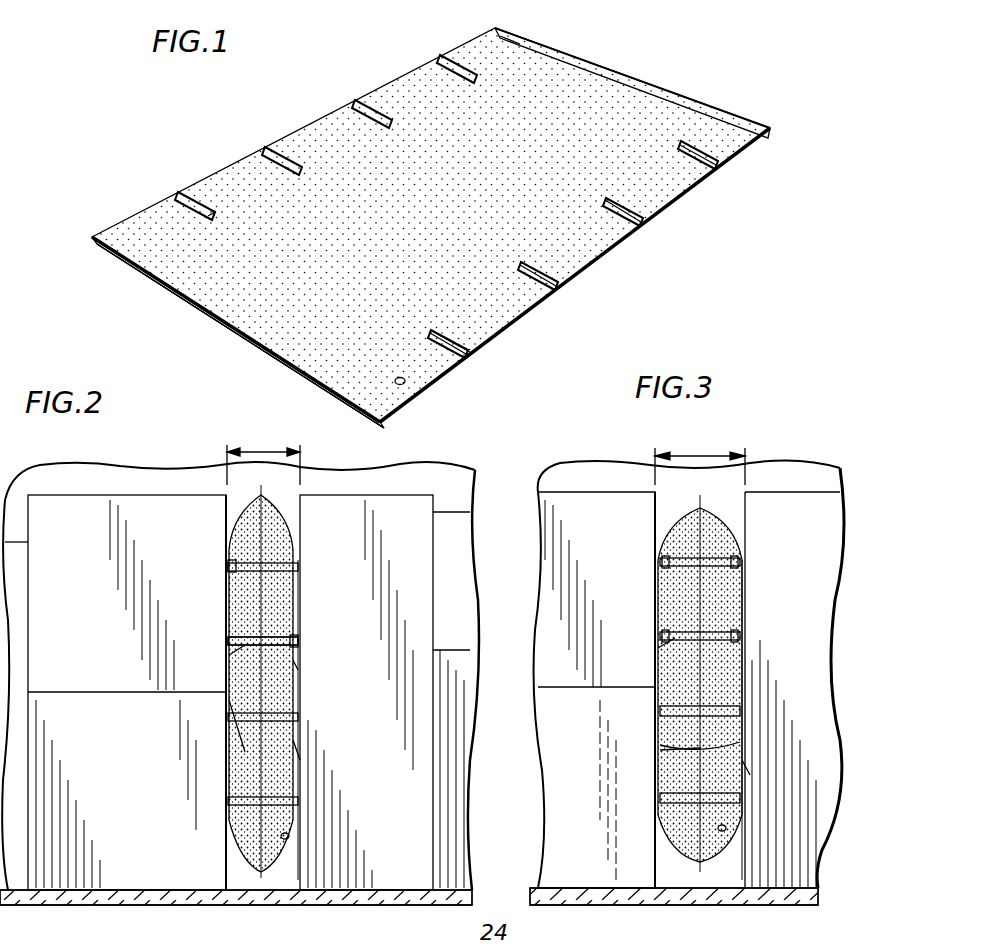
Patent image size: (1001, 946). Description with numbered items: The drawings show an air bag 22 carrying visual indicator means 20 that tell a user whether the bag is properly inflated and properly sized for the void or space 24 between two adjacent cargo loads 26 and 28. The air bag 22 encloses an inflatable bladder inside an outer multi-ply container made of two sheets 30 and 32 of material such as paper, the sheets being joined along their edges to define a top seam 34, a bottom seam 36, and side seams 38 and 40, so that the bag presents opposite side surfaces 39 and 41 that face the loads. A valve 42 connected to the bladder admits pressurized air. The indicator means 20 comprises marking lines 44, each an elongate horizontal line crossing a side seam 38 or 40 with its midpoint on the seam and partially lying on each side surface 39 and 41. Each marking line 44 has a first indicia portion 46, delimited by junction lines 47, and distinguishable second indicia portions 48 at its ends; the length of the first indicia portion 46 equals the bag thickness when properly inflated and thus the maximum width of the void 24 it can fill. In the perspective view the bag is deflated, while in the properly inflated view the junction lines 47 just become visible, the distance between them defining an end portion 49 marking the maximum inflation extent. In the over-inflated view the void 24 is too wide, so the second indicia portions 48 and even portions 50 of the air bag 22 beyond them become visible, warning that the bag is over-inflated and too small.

In FIG. 1, the visual indicator means 20 is at (718, 175).
In FIG. 2, the visual indicator means 20 is at (300, 592).
In FIG. 3, the visual indicator means 20 is at (725, 655).
In FIG. 1, the air bag 22 is at (612, 102).
In FIG. 2, the air bag 22 is at (275, 530).
In FIG. 3, the air bag 22 is at (740, 520).
In FIG. 2, the void or space 24 is at (263, 455).
In FIG. 3, the void or space 24 is at (700, 455).
In FIG. 2, the cargo load 26 is at (100, 624).
In FIG. 3, the cargo load 26 is at (580, 656).
In FIG. 2, the cargo load 28 is at (397, 672).
In FIG. 3, the cargo load 28 is at (812, 570).
In FIG. 2, the sheet 30 is at (226, 538).
In FIG. 3, the sheet 30 is at (665, 832).
In FIG. 2, the sheet 32 is at (296, 820).
In FIG. 3, the sheet 32 is at (742, 812).
In FIG. 1, the top seam 34 is at (708, 102).
In FIG. 1, the bottom seam 36 is at (228, 325).
In FIG. 1, the side seam 38 is at (210, 182).
In FIG. 1, the side surface 39 is at (300, 340).
In FIG. 2, the side surface 39 is at (245, 752).
In FIG. 3, the side surface 39 is at (670, 752).
In FIG. 1, the side seam 40 is at (520, 328).
In FIG. 2, the side seam 40 is at (270, 690).
In FIG. 3, the side seam 40 is at (740, 745).
In FIG. 2, the side surface 41 is at (300, 742).
In FIG. 3, the side surface 41 is at (745, 765).
In FIG. 1, the valve 42 is at (405, 385).
In FIG. 2, the valve 42 is at (290, 838).
In FIG. 3, the valve 42 is at (728, 830).
In FIG. 1, the marking line 44 is at (375, 95).
In FIG. 2, the marking line 44 is at (295, 783).
In FIG. 3, the marking line 44 is at (740, 785).
In FIG. 1, the first indicia portion 46 is at (450, 55).
In FIG. 2, the first indicia portion 46 is at (235, 660).
In FIG. 3, the first indicia portion 46 is at (668, 650).
In FIG. 2, the junction line 47 is at (226, 612).
In FIG. 1, the second indicia portion 48 is at (540, 52).
In FIG. 2, the second indicia portion 48 is at (226, 640).
In FIG. 3, the second indicia portion 48 is at (668, 622).
In FIG. 2, the end portion 49 is at (296, 660).
In FIG. 3, the portion of air bag beyond second indicia 50 is at (658, 712).